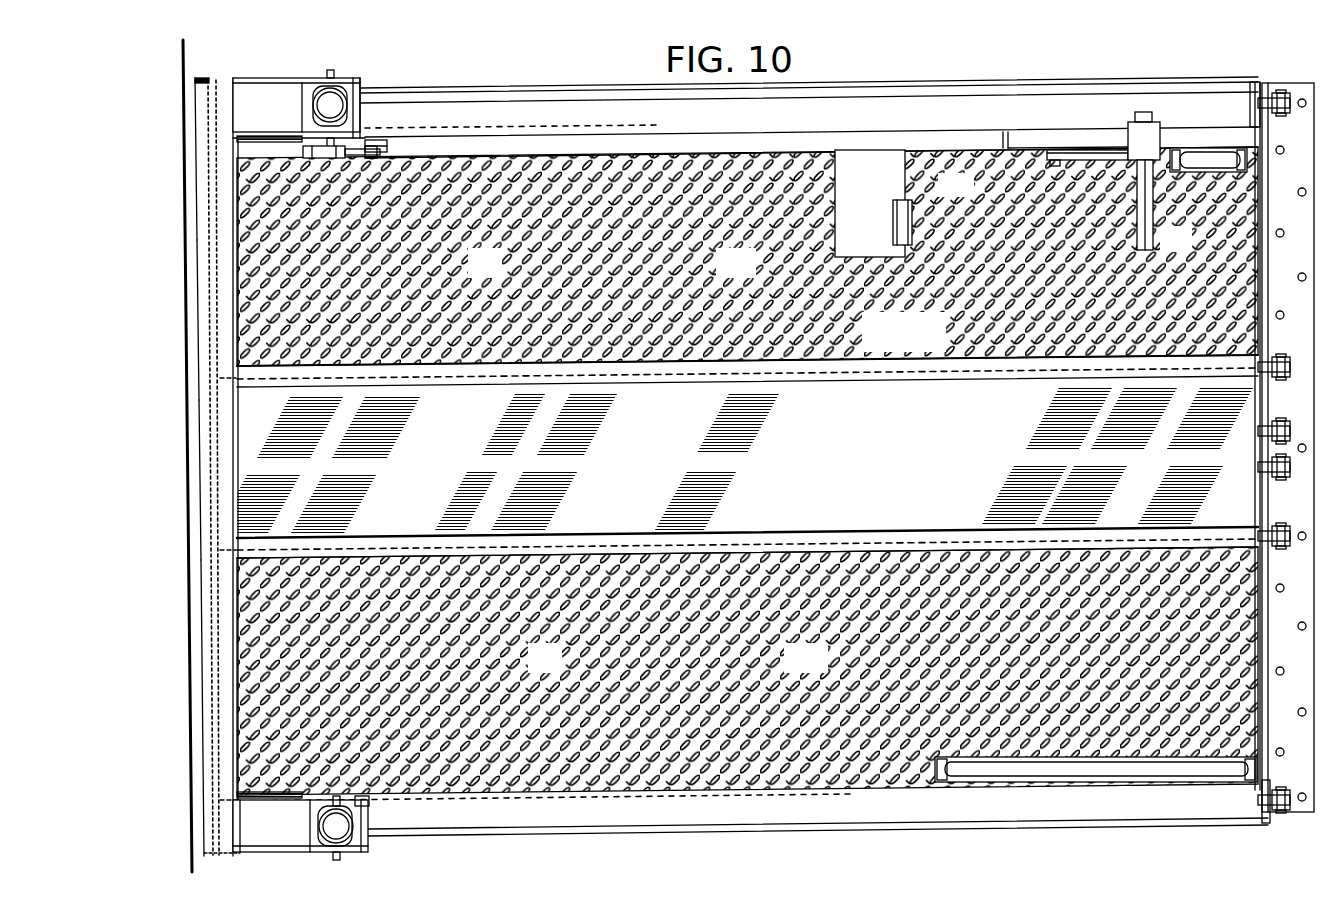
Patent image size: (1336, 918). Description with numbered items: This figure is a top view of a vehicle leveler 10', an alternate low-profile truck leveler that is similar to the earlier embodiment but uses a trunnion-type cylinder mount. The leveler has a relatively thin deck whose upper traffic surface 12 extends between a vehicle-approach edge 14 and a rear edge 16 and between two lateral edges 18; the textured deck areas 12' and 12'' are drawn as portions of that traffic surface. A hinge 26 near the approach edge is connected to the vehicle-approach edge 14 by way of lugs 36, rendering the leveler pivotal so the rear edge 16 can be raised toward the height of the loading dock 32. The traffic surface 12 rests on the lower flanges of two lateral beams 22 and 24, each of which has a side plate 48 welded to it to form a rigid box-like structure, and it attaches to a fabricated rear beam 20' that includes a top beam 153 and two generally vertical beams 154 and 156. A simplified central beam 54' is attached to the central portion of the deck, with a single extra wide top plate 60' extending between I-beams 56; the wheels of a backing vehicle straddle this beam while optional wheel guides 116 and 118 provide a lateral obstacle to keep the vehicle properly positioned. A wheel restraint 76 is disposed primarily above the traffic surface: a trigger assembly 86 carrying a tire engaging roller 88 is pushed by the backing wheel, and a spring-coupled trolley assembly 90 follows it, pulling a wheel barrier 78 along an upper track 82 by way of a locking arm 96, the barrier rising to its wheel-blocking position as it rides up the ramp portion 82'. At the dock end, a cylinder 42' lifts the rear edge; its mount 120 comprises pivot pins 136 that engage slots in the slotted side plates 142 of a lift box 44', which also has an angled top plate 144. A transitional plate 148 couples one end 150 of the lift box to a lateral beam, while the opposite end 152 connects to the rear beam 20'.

The vehicle leveler 10' is at (1201, 847).
The upper traffic surface 12 is at (747, 471).
The deck plate section 12' is at (736, 263).
The deck plate section 12'' is at (806, 658).
The vehicle-approach edge 14 is at (1262, 660).
The rear edge 16 is at (215, 332).
The lateral edges 18 is at (510, 126).
The fabricated rear beam 20' is at (197, 467).
The lateral beam 22 is at (553, 112).
The lateral beam 24 is at (928, 810).
The hinge 26 is at (1275, 68).
The loading dock 32 is at (184, 62).
The lugs 36 is at (1283, 815).
The cylinder 42' is at (367, 446).
The lift box 44' is at (300, 455).
The side plate 48 is at (887, 86).
The central beam 54' is at (904, 332).
The I-beams 56 is at (685, 382).
The top plate 60' is at (747, 456).
The wheel restraint 76 is at (1178, 116).
The wheel barrier 78 is at (1157, 205).
The upper track 82 is at (811, 128).
The ramp portion 82' is at (1048, 123).
The trigger assembly 86 is at (881, 191).
The tire engaging roller 88 is at (893, 207).
The trolley assembly 90 is at (980, 157).
The locking arm 96 is at (1090, 167).
The wheel guide 116 is at (1100, 768).
The wheel guide 118 is at (1210, 170).
The mount 120 is at (350, 112).
The pivot pins 136 is at (330, 72).
The slotted side plates 142 is at (292, 85).
The angled top plate 144 is at (307, 88).
The transitional plate 148 is at (368, 88).
The end of lift box 150 is at (367, 140).
The opposite end of lift box 152 is at (218, 97).
The top beam 153 is at (210, 300).
The vertical beam 154 is at (218, 458).
The vertical beam 156 is at (225, 632).